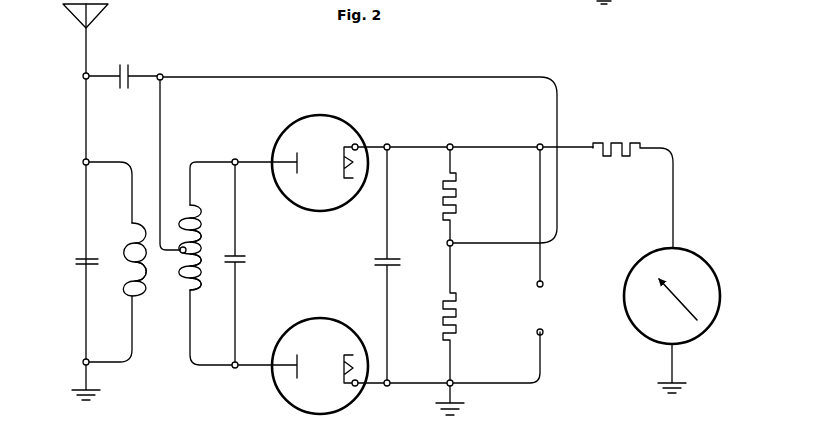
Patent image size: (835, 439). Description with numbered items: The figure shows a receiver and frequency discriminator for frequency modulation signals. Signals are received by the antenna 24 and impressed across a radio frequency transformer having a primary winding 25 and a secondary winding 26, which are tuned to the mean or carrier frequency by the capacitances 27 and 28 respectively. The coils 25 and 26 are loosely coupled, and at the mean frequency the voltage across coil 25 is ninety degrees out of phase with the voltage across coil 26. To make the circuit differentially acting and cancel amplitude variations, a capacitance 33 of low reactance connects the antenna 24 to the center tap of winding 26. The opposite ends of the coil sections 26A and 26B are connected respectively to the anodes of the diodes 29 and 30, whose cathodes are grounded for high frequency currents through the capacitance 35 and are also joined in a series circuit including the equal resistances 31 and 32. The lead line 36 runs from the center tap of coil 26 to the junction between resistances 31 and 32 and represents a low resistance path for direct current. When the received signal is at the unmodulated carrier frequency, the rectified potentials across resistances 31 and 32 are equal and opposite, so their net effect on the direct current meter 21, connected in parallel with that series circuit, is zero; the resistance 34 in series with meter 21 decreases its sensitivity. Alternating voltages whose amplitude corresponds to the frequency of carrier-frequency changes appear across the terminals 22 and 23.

The direct current meter 21 is at (685, 265).
The terminal 22 is at (543, 284).
The terminal 23 is at (545, 335).
The antenna 24 is at (93, 22).
The primary winding 25 is at (122, 252).
The secondary winding 26 is at (203, 252).
The coil section 26A is at (178, 205).
The coil section 26B is at (177, 280).
The capacitance 27 is at (78, 257).
The capacitance 28 is at (247, 258).
The diode 29 is at (346, 138).
The diode 30 is at (330, 335).
The resistance 31 is at (460, 214).
The resistance 32 is at (458, 337).
The capacitance 33 is at (129, 72).
The resistance 34 is at (604, 142).
The capacitance 35 is at (400, 265).
The lead line 36 is at (252, 76).